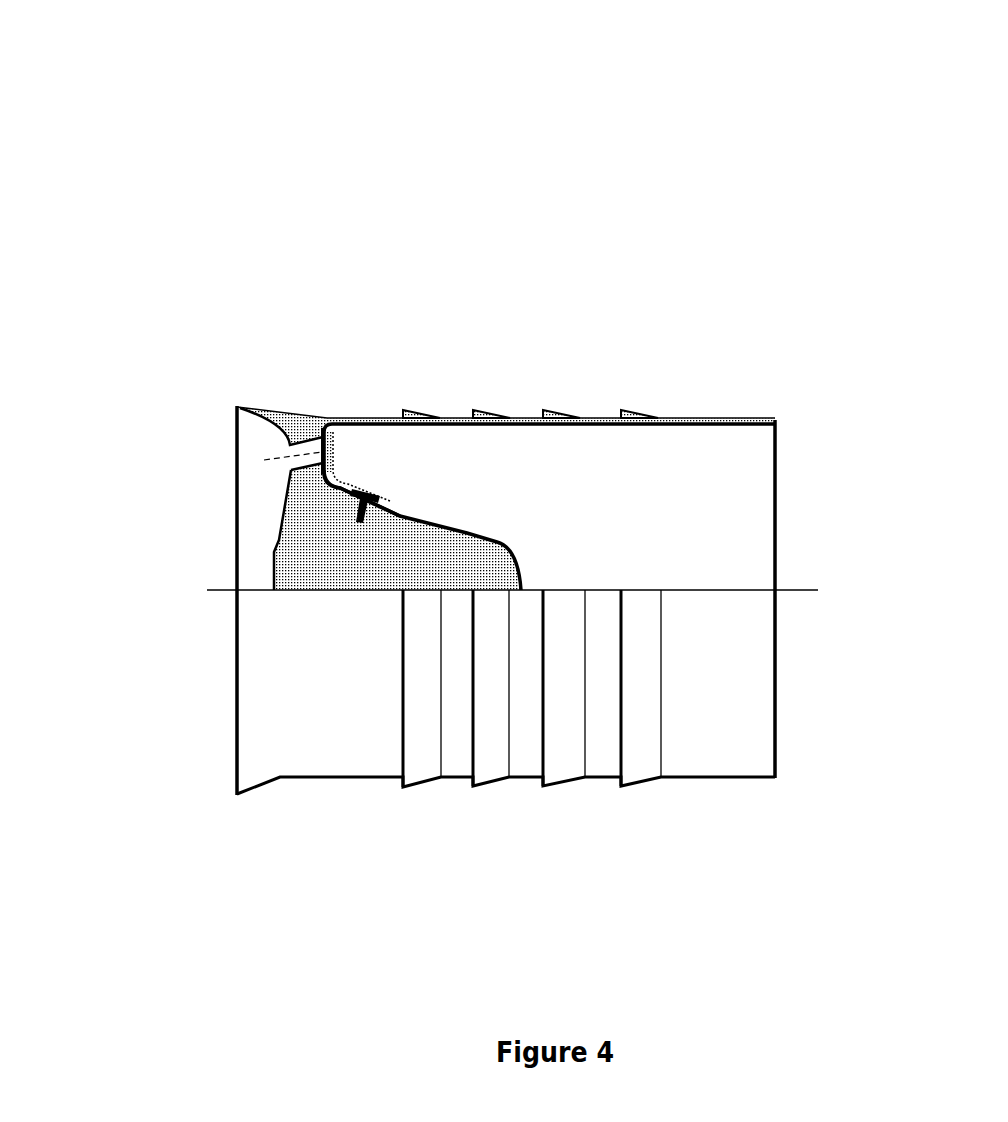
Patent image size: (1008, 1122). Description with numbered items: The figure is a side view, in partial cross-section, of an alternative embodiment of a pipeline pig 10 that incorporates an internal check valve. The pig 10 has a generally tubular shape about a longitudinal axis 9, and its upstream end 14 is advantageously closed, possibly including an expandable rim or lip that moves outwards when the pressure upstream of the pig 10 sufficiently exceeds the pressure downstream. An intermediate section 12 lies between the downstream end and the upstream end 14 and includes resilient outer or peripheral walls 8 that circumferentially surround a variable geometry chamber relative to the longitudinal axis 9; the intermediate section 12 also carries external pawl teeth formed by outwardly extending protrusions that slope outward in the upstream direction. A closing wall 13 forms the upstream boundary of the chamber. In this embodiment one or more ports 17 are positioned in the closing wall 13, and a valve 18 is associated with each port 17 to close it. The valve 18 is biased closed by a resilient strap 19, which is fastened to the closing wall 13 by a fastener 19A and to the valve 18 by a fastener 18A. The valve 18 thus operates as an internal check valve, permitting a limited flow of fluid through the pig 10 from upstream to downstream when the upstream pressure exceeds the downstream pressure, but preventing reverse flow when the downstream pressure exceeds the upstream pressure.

The pig 10 is at (228, 191).
The resilient outer walls 8 is at (683, 417).
The longitudinal axis 9 is at (802, 590).
The intermediate section 12 is at (610, 420).
The closing wall 13 is at (277, 533).
The upstream end 14 is at (242, 408).
The port 17 is at (264, 460).
The valve 18 is at (329, 450).
The fastener 18A is at (343, 478).
The resilient strap 19 is at (340, 480).
The fastener 19A is at (382, 500).